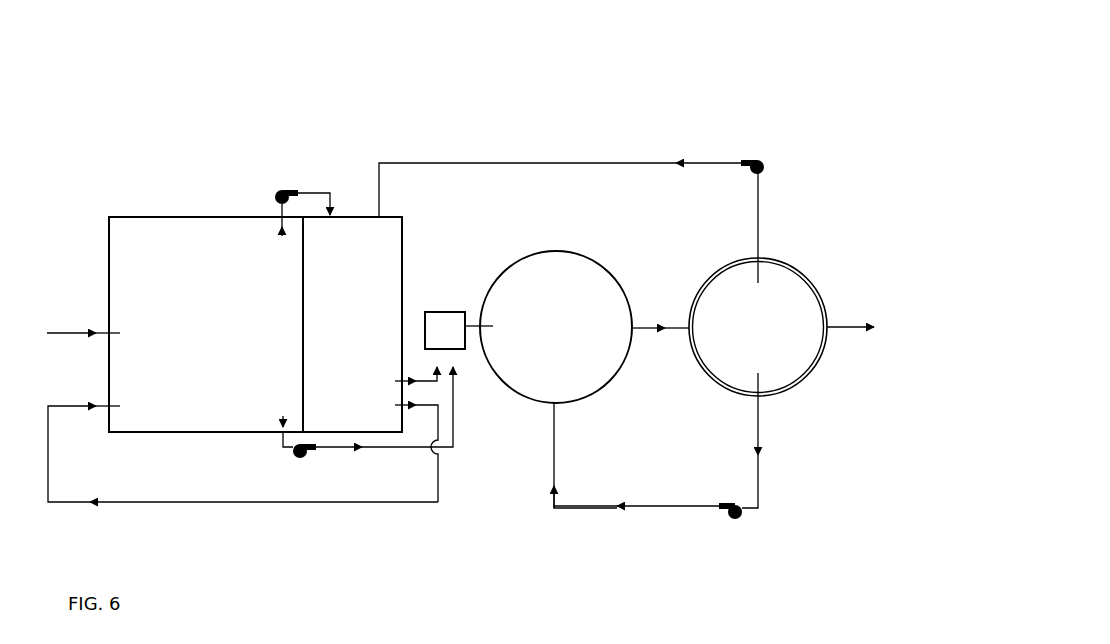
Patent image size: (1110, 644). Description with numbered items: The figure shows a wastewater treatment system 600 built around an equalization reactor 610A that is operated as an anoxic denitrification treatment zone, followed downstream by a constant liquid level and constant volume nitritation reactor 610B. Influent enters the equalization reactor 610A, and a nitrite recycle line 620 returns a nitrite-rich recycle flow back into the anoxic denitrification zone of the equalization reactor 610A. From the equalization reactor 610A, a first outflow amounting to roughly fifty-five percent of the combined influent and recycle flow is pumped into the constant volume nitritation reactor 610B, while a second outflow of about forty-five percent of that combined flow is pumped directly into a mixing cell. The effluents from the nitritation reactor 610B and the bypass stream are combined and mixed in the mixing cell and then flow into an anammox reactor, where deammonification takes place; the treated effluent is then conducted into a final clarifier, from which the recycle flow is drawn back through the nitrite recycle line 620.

The wastewater treatment system 600 is at (649, 95).
The equalization reactor 610A is at (206, 324).
The constant volume nitritation reactor 610B is at (352, 324).
The nitrite recycle line 620 is at (225, 502).